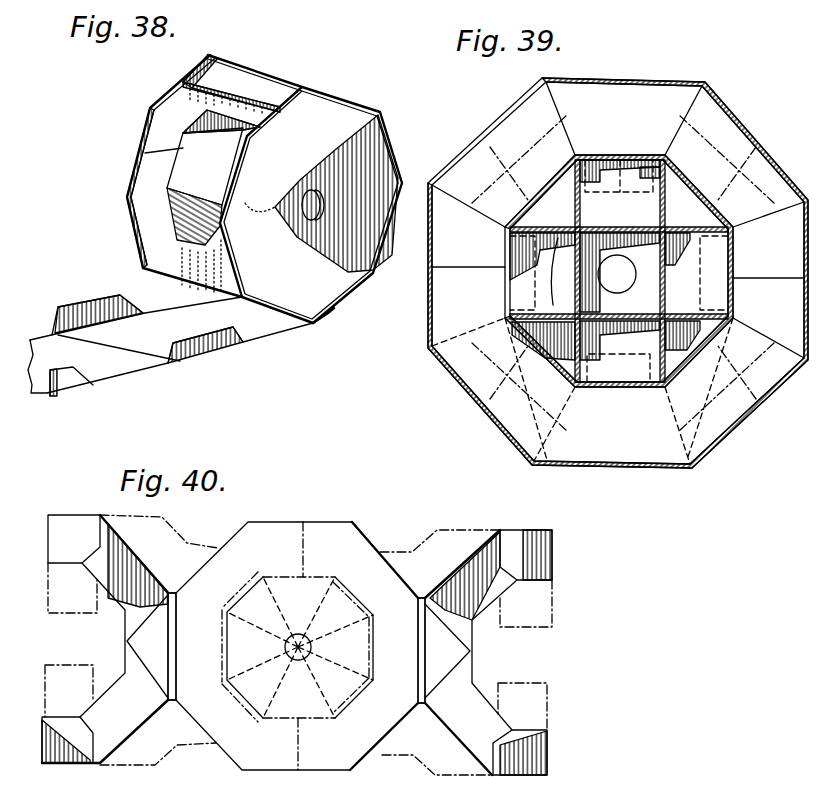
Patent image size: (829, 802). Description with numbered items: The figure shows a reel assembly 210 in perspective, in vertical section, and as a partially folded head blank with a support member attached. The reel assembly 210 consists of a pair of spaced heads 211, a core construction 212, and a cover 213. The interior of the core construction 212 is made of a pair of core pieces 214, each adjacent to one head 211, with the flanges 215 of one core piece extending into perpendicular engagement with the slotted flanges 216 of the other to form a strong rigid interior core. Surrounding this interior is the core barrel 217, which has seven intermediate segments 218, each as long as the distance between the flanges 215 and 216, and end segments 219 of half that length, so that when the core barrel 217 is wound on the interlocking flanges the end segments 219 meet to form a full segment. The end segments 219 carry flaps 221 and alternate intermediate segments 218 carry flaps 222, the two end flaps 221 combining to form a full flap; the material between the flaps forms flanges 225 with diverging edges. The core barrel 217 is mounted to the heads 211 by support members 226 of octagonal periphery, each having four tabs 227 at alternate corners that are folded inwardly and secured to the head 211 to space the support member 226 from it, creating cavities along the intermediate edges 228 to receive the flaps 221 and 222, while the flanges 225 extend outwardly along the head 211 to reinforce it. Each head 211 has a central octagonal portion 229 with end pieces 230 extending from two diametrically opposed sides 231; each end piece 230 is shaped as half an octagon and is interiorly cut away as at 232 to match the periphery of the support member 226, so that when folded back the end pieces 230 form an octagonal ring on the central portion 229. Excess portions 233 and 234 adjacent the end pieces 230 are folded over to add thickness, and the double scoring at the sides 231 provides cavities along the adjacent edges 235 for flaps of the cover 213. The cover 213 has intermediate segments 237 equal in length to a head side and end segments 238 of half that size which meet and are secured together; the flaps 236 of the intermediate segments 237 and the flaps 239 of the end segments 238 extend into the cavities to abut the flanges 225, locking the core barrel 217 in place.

In FIG. 38, the reel assembly 210 is at (356, 93).
In FIG. 39, the reel assembly 210 is at (434, 358).
In FIG. 38, the head 211 is at (148, 182).
In FIG. 39, the head 211 is at (599, 273).
In FIG. 40, the head 211 is at (306, 518).
In FIG. 38, the core construction 212 is at (198, 132).
In FIG. 38, the cover 213 is at (270, 328).
In FIG. 39, the cover 213 is at (704, 464).
In FIG. 39, the core piece 214 is at (621, 157).
In FIG. 39, the flange 215 is at (660, 197).
In FIG. 39, the slotted flange 216 is at (562, 271).
In FIG. 39, the core barrel 217 is at (733, 316).
In FIG. 39, the intermediate segment 218 is at (735, 253).
In FIG. 39, the end segment 219 is at (660, 162).
In FIG. 39, the flap 221 is at (640, 165).
In FIG. 39, the flap 222 is at (720, 273).
In FIG. 39, the flange 225 is at (745, 150).
In FIG. 39, the support member 226 is at (575, 150).
In FIG. 40, the support member 226 is at (297, 597).
In FIG. 40, the tab 227 is at (247, 602).
In FIG. 40, the intermediate edge 228 is at (282, 573).
In FIG. 40, the central octagonal portion 229 is at (317, 538).
In FIG. 39, the end piece 230 is at (430, 318).
In FIG. 40, the end piece 230 is at (130, 648).
In FIG. 40, the side 231 is at (180, 623).
In FIG. 40, the cut-away 232 is at (80, 698).
In FIG. 40, the excess portion 233 is at (120, 592).
In FIG. 40, the excess portion 234 is at (74, 530).
In FIG. 40, the edge 235 is at (233, 542).
In FIG. 38, the flap 236 is at (207, 350).
In FIG. 39, the flap 236 is at (780, 170).
In FIG. 38, the intermediate segment 237 is at (133, 333).
In FIG. 39, the intermediate segment 237 is at (808, 197).
In FIG. 38, the end segment 238 is at (270, 80).
In FIG. 39, the end segment 238 is at (512, 108).
In FIG. 38, the flap 239 is at (72, 388).
In FIG. 39, the flap 239 is at (490, 113).